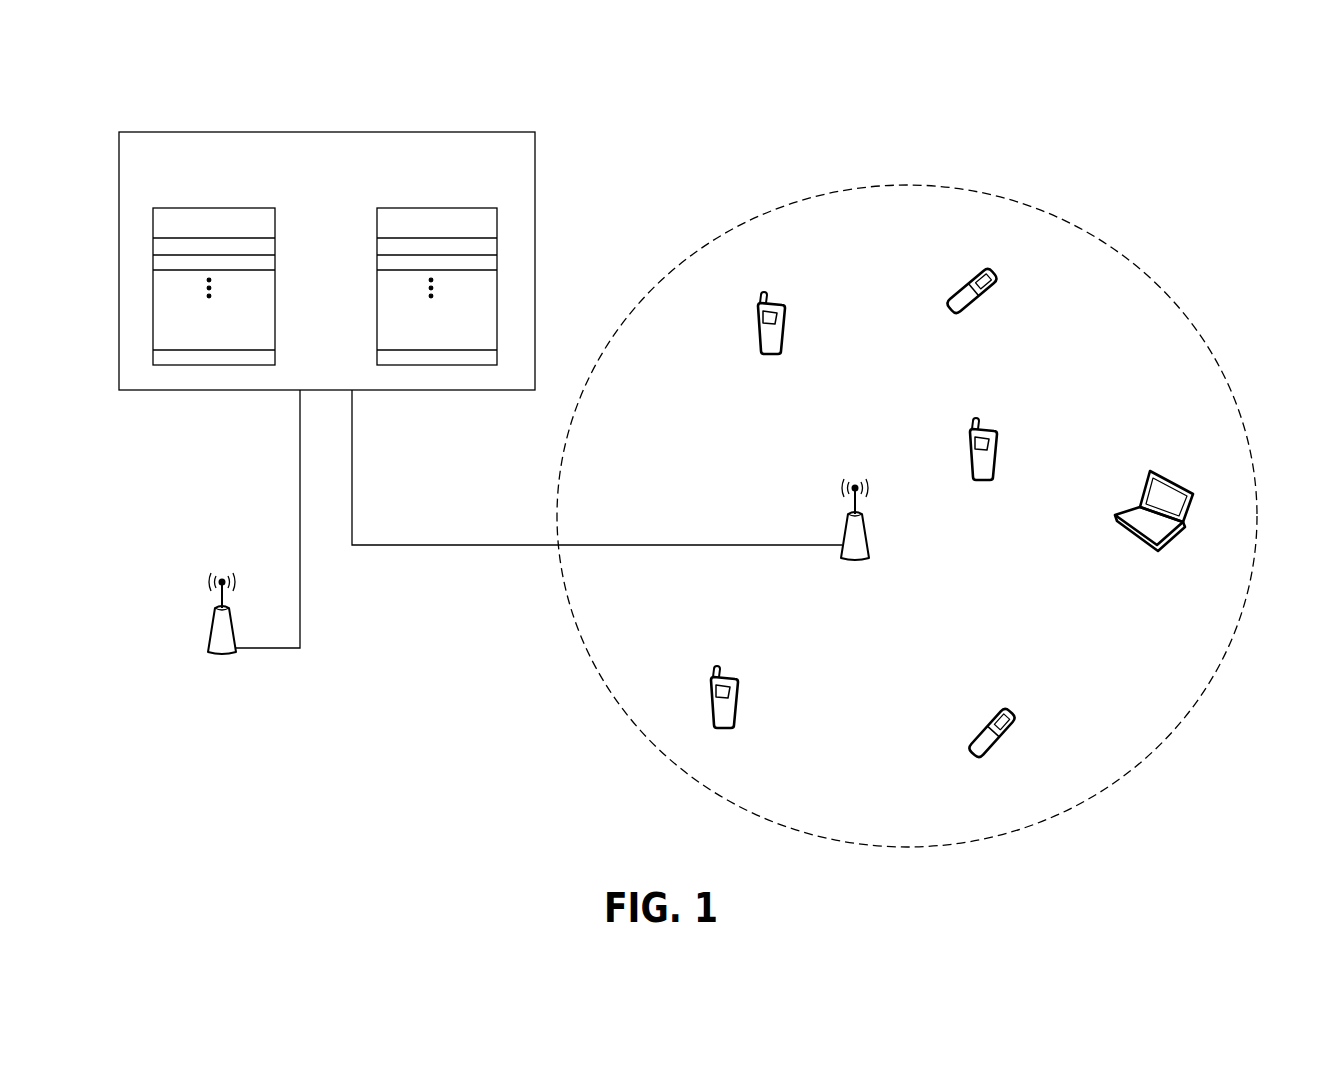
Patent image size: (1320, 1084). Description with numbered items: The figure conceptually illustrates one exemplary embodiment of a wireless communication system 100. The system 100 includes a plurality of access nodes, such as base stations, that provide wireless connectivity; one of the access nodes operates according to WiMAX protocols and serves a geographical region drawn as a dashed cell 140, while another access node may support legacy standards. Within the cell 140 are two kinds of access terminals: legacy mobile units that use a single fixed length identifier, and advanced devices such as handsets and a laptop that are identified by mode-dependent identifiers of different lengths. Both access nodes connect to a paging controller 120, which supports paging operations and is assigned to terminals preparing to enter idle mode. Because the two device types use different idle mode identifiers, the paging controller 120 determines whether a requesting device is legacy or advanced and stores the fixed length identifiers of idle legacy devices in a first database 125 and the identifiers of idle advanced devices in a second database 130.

The wireless communication system 100 is at (1211, 178).
The paging controller 120 is at (505, 164).
The first database 125 is at (275, 338).
The second database 130 is at (377, 262).
The cell 140 is at (1075, 805).